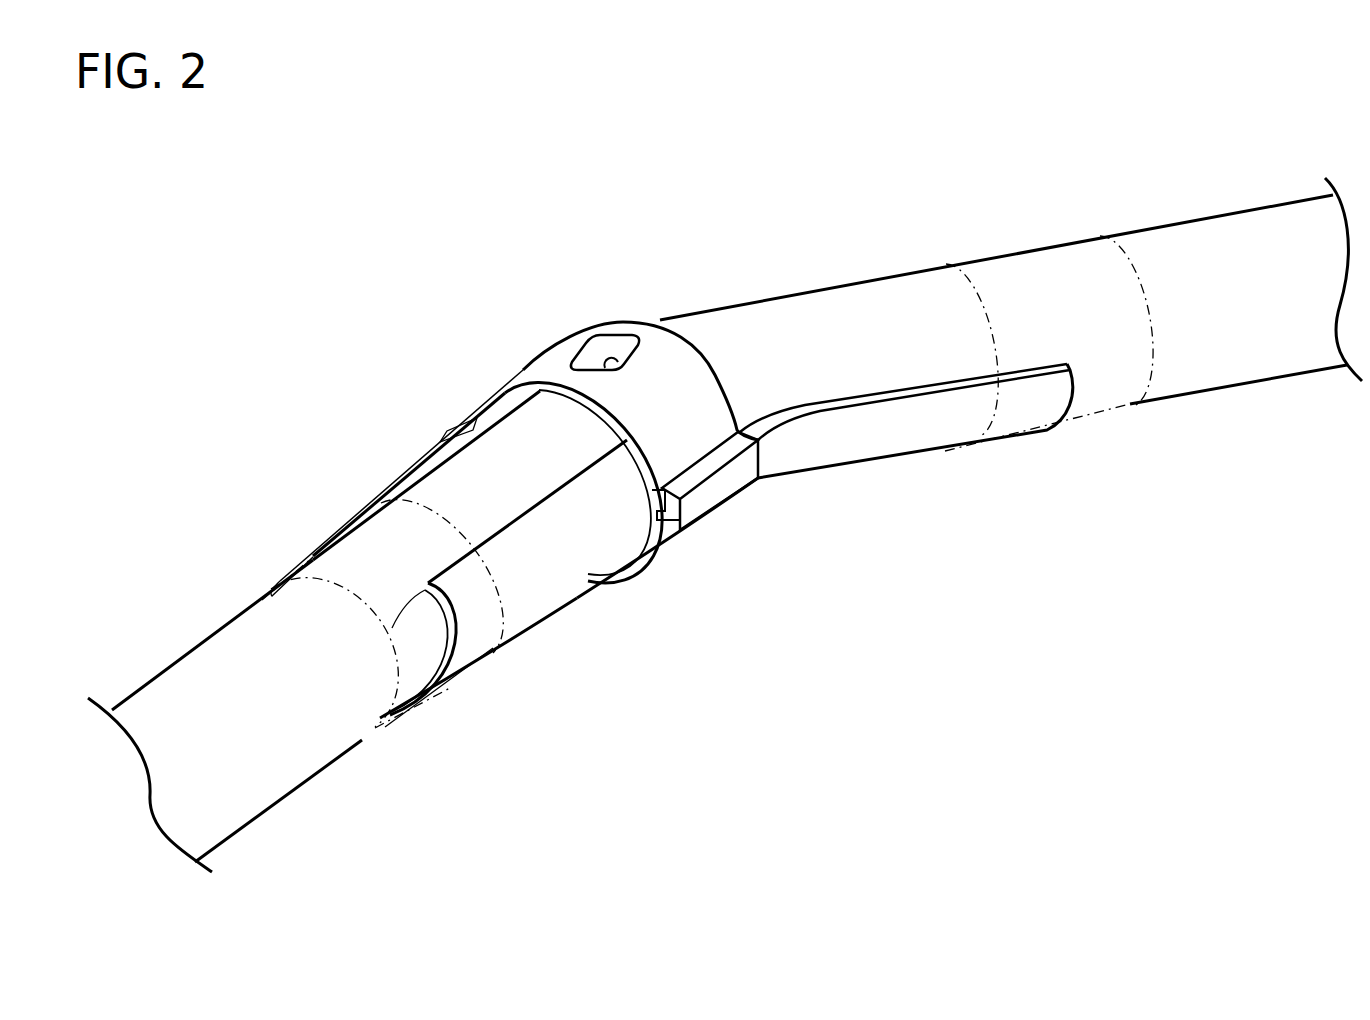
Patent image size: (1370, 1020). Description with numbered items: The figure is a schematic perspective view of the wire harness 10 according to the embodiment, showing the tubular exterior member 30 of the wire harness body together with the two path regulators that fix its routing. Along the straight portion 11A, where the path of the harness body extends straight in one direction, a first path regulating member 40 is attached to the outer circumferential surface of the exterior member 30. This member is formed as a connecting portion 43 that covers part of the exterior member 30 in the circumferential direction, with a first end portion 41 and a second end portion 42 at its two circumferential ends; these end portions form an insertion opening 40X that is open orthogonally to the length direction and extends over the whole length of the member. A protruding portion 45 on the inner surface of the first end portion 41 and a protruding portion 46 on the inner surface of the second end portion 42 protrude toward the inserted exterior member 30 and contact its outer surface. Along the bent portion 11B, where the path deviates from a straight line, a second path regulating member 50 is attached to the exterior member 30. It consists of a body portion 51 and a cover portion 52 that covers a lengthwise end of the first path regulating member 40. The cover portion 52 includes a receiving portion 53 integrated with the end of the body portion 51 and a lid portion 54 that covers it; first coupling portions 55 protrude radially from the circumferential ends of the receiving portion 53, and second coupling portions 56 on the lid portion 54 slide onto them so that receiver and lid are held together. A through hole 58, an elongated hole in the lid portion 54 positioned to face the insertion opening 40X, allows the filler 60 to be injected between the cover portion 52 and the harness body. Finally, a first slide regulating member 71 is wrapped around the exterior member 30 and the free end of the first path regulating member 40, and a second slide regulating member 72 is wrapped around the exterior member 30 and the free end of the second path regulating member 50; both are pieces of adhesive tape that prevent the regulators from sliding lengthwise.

The wire harness 10 is at (725, 465).
The straight portion 11A is at (455, 480).
The bent portion 11B is at (800, 305).
The exterior member 30 is at (205, 642).
The first path regulating member 40 is at (572, 605).
The insertion opening 40X is at (530, 505).
The first end portion 41 is at (398, 484).
The second end portion 42 is at (427, 580).
The connecting portion 43 is at (520, 630).
The protruding portion 45 is at (313, 565).
The protruding portion 46 is at (390, 628).
The second path regulating member 50 is at (899, 458).
The body portion 51 is at (865, 412).
The cover portion 52 is at (551, 366).
The receiving portion 53 is at (660, 552).
The lid portion 54 is at (597, 326).
The first coupling portion 55 is at (690, 512).
The second coupling portion 56 is at (740, 470).
The through hole 58 is at (620, 354).
The filler 60 is at (625, 340).
The first slide regulating member 71 is at (330, 518).
The second slide regulating member 72 is at (1062, 242).